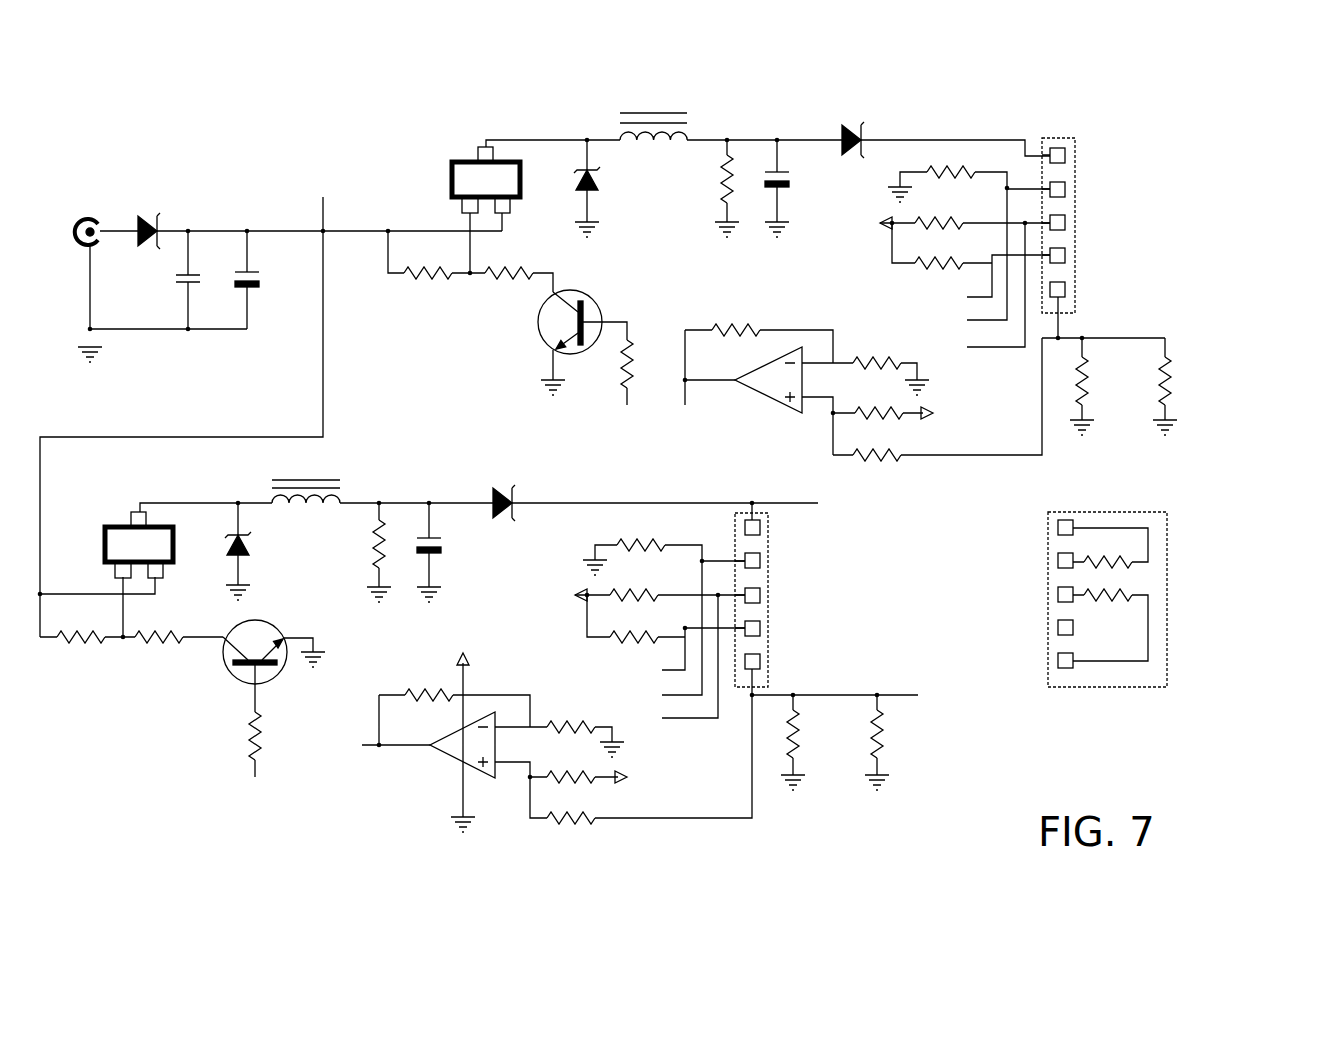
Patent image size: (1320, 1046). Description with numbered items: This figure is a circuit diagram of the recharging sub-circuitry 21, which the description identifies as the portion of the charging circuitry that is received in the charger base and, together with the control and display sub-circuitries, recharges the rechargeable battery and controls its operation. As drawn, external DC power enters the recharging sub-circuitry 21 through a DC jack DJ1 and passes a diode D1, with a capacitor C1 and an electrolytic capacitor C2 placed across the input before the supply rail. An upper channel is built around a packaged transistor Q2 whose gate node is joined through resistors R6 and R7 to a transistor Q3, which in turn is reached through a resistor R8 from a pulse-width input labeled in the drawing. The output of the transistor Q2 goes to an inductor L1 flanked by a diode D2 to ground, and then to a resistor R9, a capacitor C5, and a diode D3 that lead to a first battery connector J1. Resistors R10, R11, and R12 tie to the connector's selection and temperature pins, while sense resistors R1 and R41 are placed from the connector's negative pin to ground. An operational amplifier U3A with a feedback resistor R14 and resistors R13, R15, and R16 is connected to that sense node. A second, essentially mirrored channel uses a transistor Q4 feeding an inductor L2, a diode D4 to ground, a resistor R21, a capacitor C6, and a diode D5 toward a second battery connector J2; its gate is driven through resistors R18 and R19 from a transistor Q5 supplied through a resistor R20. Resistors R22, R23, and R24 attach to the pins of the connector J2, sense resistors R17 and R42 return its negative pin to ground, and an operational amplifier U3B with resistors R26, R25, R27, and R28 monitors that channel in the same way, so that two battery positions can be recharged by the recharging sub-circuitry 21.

The recharging sub-circuitry 21 is at (365, 165).
The DC jack DJ1 is at (69, 233).
The diode D1 is at (149, 241).
The capacitor C1 is at (200, 279).
The electrolytic capacitor 470uF C2 is at (265, 292).
The resistor R6 is at (428, 264).
The resistor R7 is at (509, 264).
The MOSFET Q2 is at (486, 165).
The inductor L1 is at (653, 137).
The zener diode D2 is at (599, 202).
The resistor R9 is at (720, 196).
The capacitor 100uF C5 is at (792, 199).
The diode D3 is at (853, 131).
The NPN transistor Q3 is at (557, 342).
The resistor R8 is at (635, 364).
The resistor 20K R10 is at (935, 177).
The resistor R11 is at (939, 216).
The resistor 10K R12 is at (944, 265).
The A battery connector J1 is at (1168, 210).
The sense resistor 0.1R R1 is at (1110, 396).
The sense resistor 0.1R R41 is at (1193, 396).
The operational amplifier U3A is at (767, 380).
The feedback resistor 150K R14 is at (735, 331).
The resistor 10K R13 is at (872, 364).
The resistor R15 is at (877, 405).
The resistor R16 is at (876, 447).
The MOSFET Q4 is at (139, 529).
The inductor L2 is at (306, 482).
The diode D5 is at (501, 495).
The zener diode D4 is at (250, 566).
The resistor R21 is at (372, 561).
The capacitor 100uF C6 is at (445, 564).
The resistor R18 is at (81, 630).
The resistor R19 is at (159, 630).
The NPN transistor Q5 is at (247, 652).
The resistor R20 is at (268, 736).
The resistor 20K R22 is at (646, 547).
The resistor R23 is at (634, 588).
The resistor 10K R24 is at (639, 638).
The B battery connector J2 is at (816, 575).
The sense resistor 0.1R R17 is at (820, 750).
The sense resistor 0.1R R42 is at (904, 750).
The operational amplifier U3B is at (463, 742).
The feedback resistor 150K R26 is at (420, 696).
The resistor 10K R25 is at (566, 728).
The resistor R27 is at (571, 769).
The resistor R28 is at (571, 810).